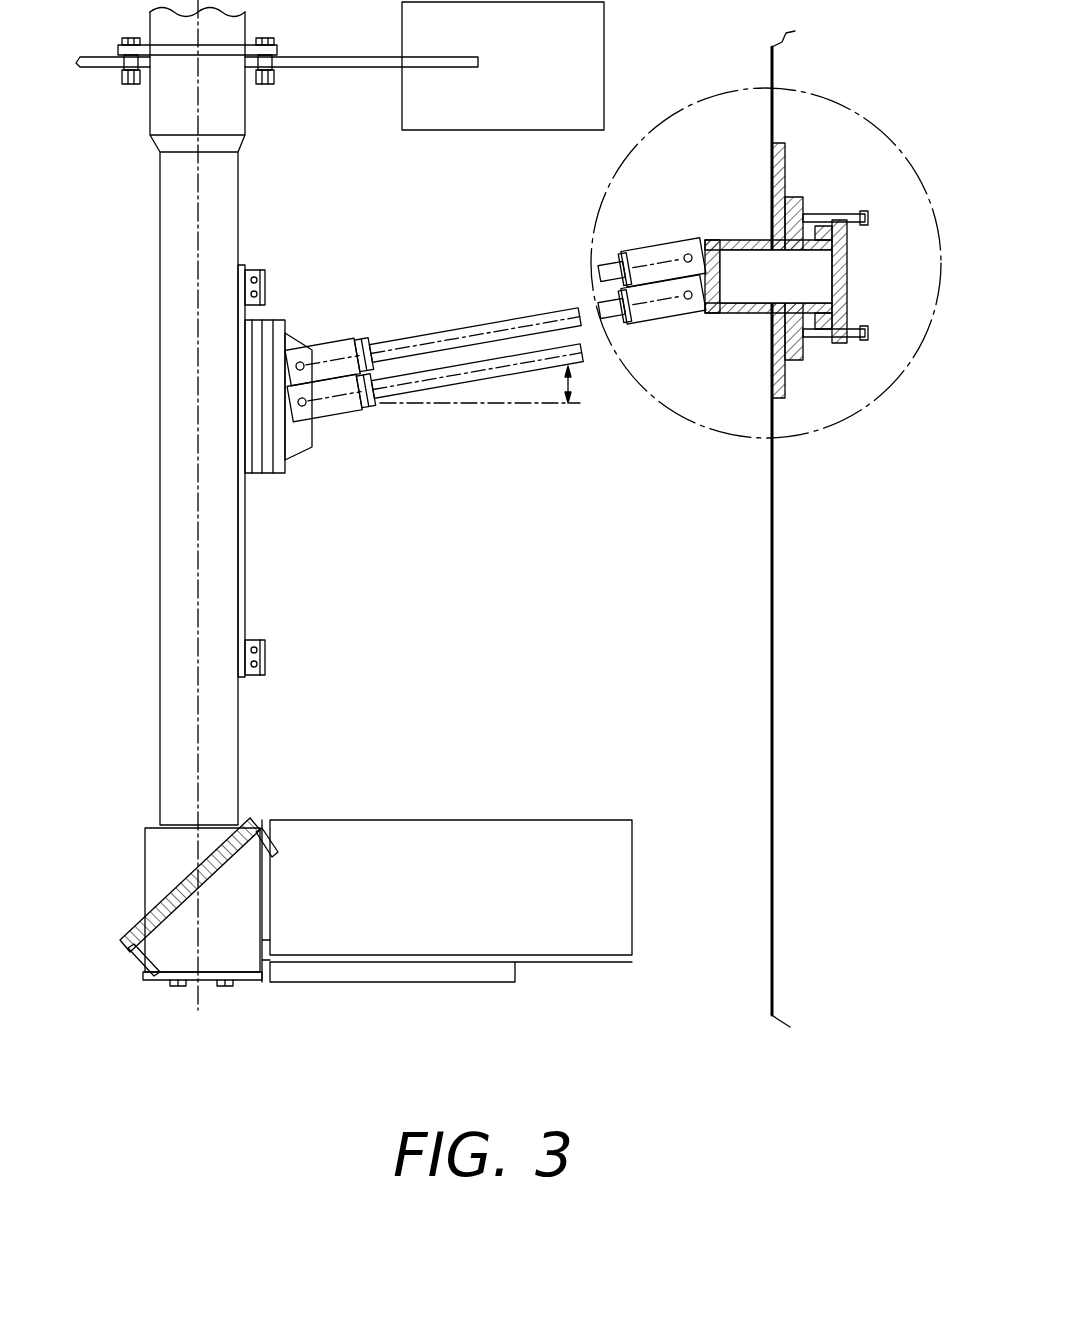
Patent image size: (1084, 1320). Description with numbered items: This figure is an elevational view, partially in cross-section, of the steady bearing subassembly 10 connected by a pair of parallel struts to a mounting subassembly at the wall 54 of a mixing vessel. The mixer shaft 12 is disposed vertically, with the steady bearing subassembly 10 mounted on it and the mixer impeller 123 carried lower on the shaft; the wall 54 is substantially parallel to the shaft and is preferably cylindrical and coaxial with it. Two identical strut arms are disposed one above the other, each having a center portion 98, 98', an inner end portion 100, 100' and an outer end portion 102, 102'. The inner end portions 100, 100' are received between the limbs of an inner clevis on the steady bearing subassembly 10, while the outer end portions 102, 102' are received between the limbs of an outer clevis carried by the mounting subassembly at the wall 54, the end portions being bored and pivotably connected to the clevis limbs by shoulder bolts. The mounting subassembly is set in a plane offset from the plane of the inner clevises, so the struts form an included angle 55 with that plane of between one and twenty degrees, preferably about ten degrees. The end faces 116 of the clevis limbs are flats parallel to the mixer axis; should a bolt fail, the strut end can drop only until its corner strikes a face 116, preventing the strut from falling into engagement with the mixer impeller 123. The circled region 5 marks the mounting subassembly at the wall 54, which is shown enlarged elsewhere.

The detail region (FIG. 5 enlargement) 5 is at (857, 112).
The steady bearing subassembly 10 is at (294, 316).
The mixer shaft 12 is at (176, 284).
The wall 54 is at (785, 164).
The included angle 55 is at (572, 388).
The center portion 98 is at (475, 313).
The center portion 98' is at (477, 396).
The inner end portion 100 is at (349, 326).
The inner end portion 100' is at (361, 424).
The outer end portion 102 is at (651, 233).
The outer end portion 102' is at (667, 329).
The end face 116 is at (312, 434).
The mixer impeller 123 is at (162, 900).